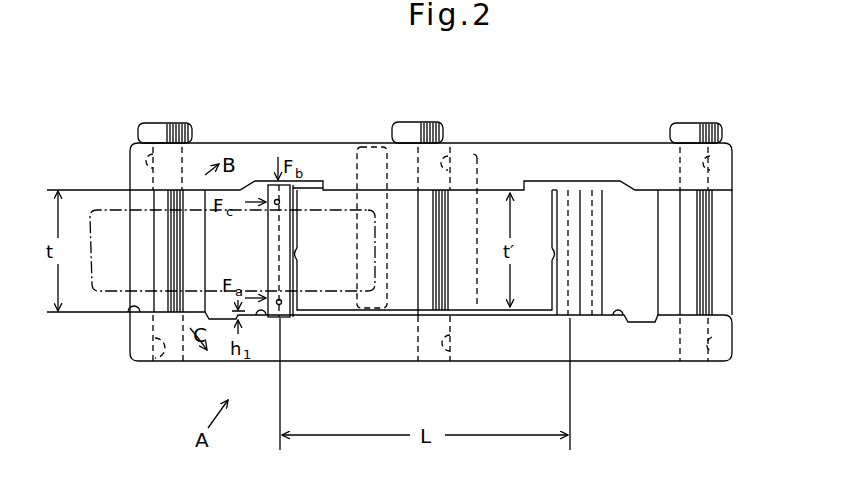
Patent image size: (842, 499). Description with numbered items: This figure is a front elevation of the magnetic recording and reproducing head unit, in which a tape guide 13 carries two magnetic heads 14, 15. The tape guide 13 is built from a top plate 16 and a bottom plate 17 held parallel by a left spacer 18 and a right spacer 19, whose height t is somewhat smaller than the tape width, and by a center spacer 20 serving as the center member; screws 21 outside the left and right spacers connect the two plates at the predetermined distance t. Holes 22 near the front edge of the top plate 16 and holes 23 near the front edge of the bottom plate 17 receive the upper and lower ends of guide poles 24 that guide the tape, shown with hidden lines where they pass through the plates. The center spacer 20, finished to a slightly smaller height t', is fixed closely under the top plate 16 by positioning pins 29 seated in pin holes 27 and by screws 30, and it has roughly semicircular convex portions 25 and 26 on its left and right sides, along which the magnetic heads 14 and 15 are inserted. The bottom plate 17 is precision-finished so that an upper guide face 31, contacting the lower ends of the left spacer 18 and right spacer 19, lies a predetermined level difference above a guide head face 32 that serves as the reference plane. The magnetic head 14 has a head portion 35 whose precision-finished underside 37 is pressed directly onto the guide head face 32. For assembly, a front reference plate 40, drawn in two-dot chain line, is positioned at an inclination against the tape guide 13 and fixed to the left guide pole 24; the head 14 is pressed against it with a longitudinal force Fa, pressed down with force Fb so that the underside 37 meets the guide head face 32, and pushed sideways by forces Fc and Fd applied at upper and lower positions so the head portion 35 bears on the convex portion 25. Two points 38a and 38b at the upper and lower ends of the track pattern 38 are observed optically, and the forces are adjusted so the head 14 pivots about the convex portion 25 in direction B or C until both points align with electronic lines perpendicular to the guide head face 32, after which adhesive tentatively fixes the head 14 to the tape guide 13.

The tape guide 13 is at (205, 366).
The magnetic head 14 is at (265, 183).
The magnetic head 15 is at (597, 240).
The top plate 16 is at (547, 153).
The bottom plate 17 is at (662, 345).
The left spacer 18 is at (195, 200).
The right spacer 19 is at (727, 207).
The center spacer 20 is at (547, 196).
The screws 21 is at (157, 133).
The holes 22 is at (143, 157).
The holes 23 is at (163, 352).
The guide poles 24 is at (160, 197).
The convex portion 25 is at (297, 253).
The convex portion 26 is at (550, 262).
The pin holes 27 is at (510, 170).
The positioning pins 29 is at (372, 150).
The screws 30 is at (424, 122).
The upper guide face 31 is at (128, 313).
The guide head face 32 is at (263, 318).
The head portion 35 is at (268, 225).
The underside 37 is at (283, 318).
The track pattern 38 is at (293, 257).
The point on the track pattern 38a is at (280, 200).
The point on the track pattern 38b is at (282, 304).
The front reference plate 40 is at (98, 208).